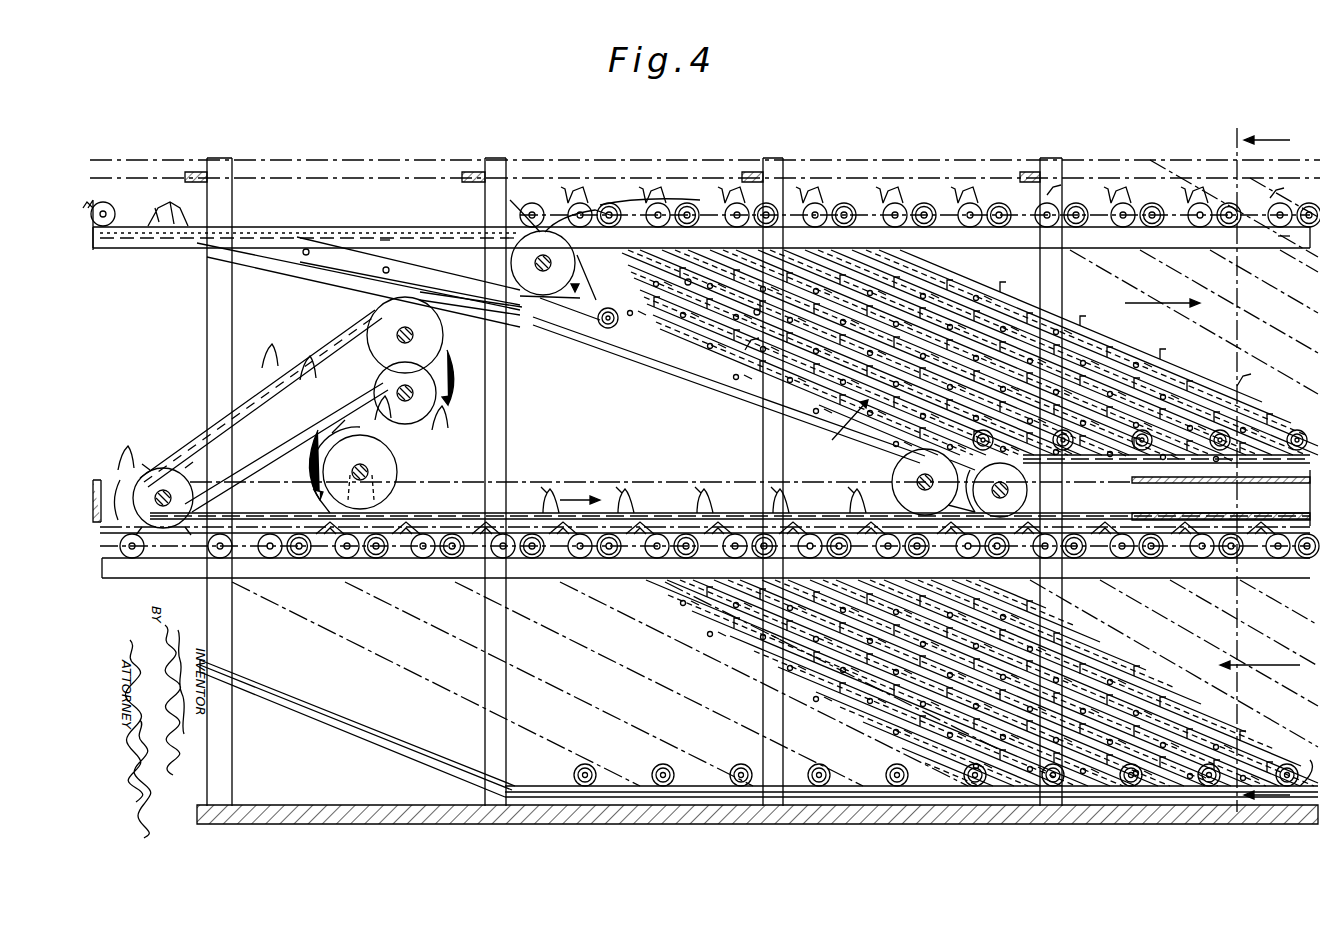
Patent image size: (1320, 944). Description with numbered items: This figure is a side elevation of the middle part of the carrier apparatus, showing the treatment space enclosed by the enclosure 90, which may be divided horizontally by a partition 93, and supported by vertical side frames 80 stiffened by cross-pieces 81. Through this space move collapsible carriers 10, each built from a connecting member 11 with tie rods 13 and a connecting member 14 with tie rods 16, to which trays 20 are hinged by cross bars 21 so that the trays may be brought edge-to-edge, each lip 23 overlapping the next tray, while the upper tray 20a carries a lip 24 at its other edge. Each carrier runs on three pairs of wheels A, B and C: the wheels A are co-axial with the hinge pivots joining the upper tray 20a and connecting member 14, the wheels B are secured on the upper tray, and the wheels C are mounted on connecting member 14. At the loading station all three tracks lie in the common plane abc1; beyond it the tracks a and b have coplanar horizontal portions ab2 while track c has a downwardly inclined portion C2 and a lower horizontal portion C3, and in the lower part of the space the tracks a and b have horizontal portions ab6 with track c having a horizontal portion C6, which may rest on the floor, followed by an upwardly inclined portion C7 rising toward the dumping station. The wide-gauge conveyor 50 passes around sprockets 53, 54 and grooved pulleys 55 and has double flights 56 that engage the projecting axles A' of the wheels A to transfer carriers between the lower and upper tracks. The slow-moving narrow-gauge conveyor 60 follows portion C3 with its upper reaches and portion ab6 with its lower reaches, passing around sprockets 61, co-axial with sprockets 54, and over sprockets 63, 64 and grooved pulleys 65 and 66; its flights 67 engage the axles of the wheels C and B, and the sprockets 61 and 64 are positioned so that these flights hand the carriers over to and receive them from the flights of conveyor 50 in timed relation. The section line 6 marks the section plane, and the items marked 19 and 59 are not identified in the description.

The section line 6- 6 is at (1256, 464).
The collapsible carrier 10 is at (870, 405).
The connecting member 11 is at (255, 262).
The tie rods 13 is at (318, 275).
The connecting member 14 is at (380, 268).
The tie rods 16 is at (400, 276).
The guide path line 19 is at (415, 642).
The carrying element or tray 20 is at (1160, 346).
The upper tray 20a is at (130, 205).
The cross bars 21 is at (300, 258).
The lip 23 is at (670, 204).
The lip 24 is at (508, 202).
The wide-gauge conveyor 50 is at (338, 352).
The sprocket 53 is at (570, 285).
The sprocket 54 is at (195, 497).
The grooved pulley 55 is at (443, 330).
The double flights 56 is at (556, 320).
The upper track rail 59 is at (352, 218).
The narrow-gauge conveyor 60 is at (535, 512).
The sprocket 61 is at (180, 462).
The sprocket 63 is at (374, 400).
The sprocket 64 is at (1040, 486).
The grooved pulley 65 is at (397, 462).
The grooved pulley 66 is at (905, 466).
The flights 67 is at (320, 360).
The vertical side frames 80 is at (212, 299).
The cross-pieces 81 is at (470, 172).
The enclosure 90 is at (358, 160).
The partition 93 is at (1195, 478).
The wheels A is at (742, 370).
The projecting axles A' is at (731, 366).
The wheels B is at (105, 204).
The wheels C is at (620, 330).
The downwardly inclined portion of track c C2 is at (729, 390).
The horizontal portion of track c C3 is at (1296, 498).
The horizontal portion of track c C6 is at (1310, 760).
The upwardly inclined portion of track c C7 is at (345, 728).
The coplanar horizontal portions of tracks a and b ab2 is at (1282, 236).
The coplanar horizontal portions of tracks a and b ab6 is at (1292, 560).
The common track level line abc1 is at (392, 235).